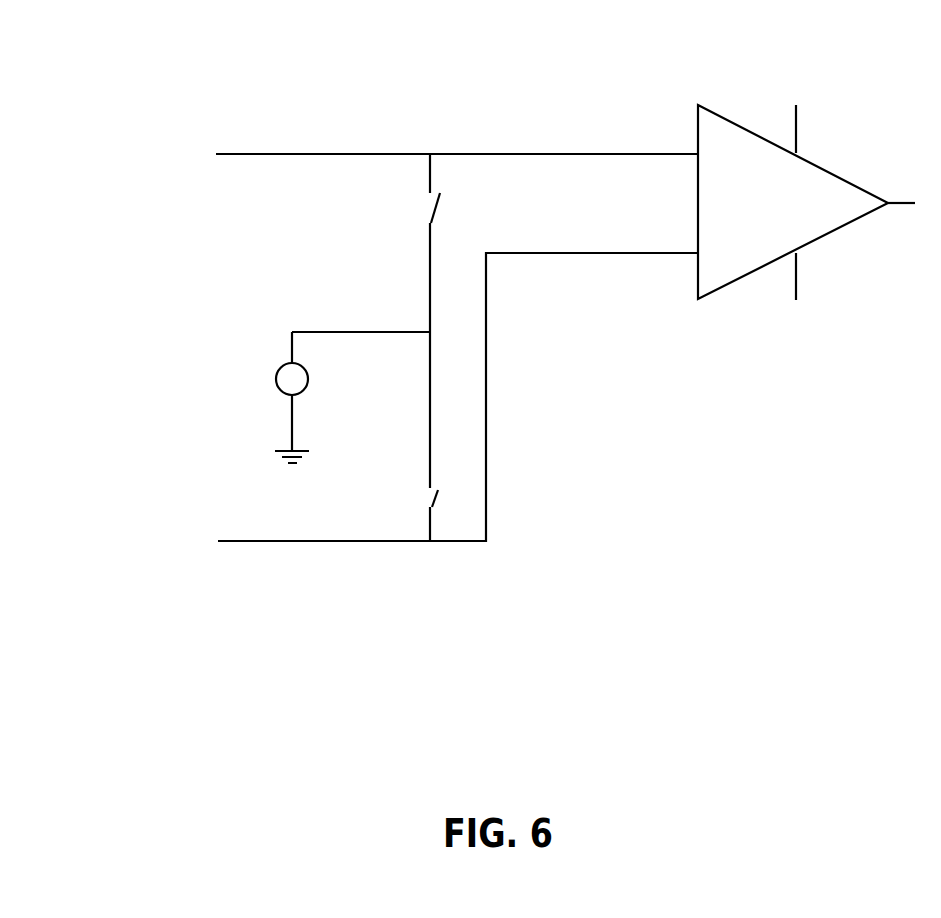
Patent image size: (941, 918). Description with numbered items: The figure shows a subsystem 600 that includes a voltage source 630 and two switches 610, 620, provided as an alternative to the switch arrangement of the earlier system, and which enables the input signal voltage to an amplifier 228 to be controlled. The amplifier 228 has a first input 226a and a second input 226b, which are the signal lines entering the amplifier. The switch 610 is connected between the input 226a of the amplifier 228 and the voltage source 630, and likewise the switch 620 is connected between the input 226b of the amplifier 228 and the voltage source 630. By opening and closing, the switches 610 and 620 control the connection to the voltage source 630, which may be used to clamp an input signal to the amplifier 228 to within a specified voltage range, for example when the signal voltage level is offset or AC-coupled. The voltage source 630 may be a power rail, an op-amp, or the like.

The subsystem 600 is at (44, 82).
The switch 610 is at (428, 228).
The switch 620 is at (428, 524).
The voltage source 630 is at (277, 381).
The amplifier 228 is at (722, 290).
The input 226a is at (671, 156).
The input 226b is at (671, 255).